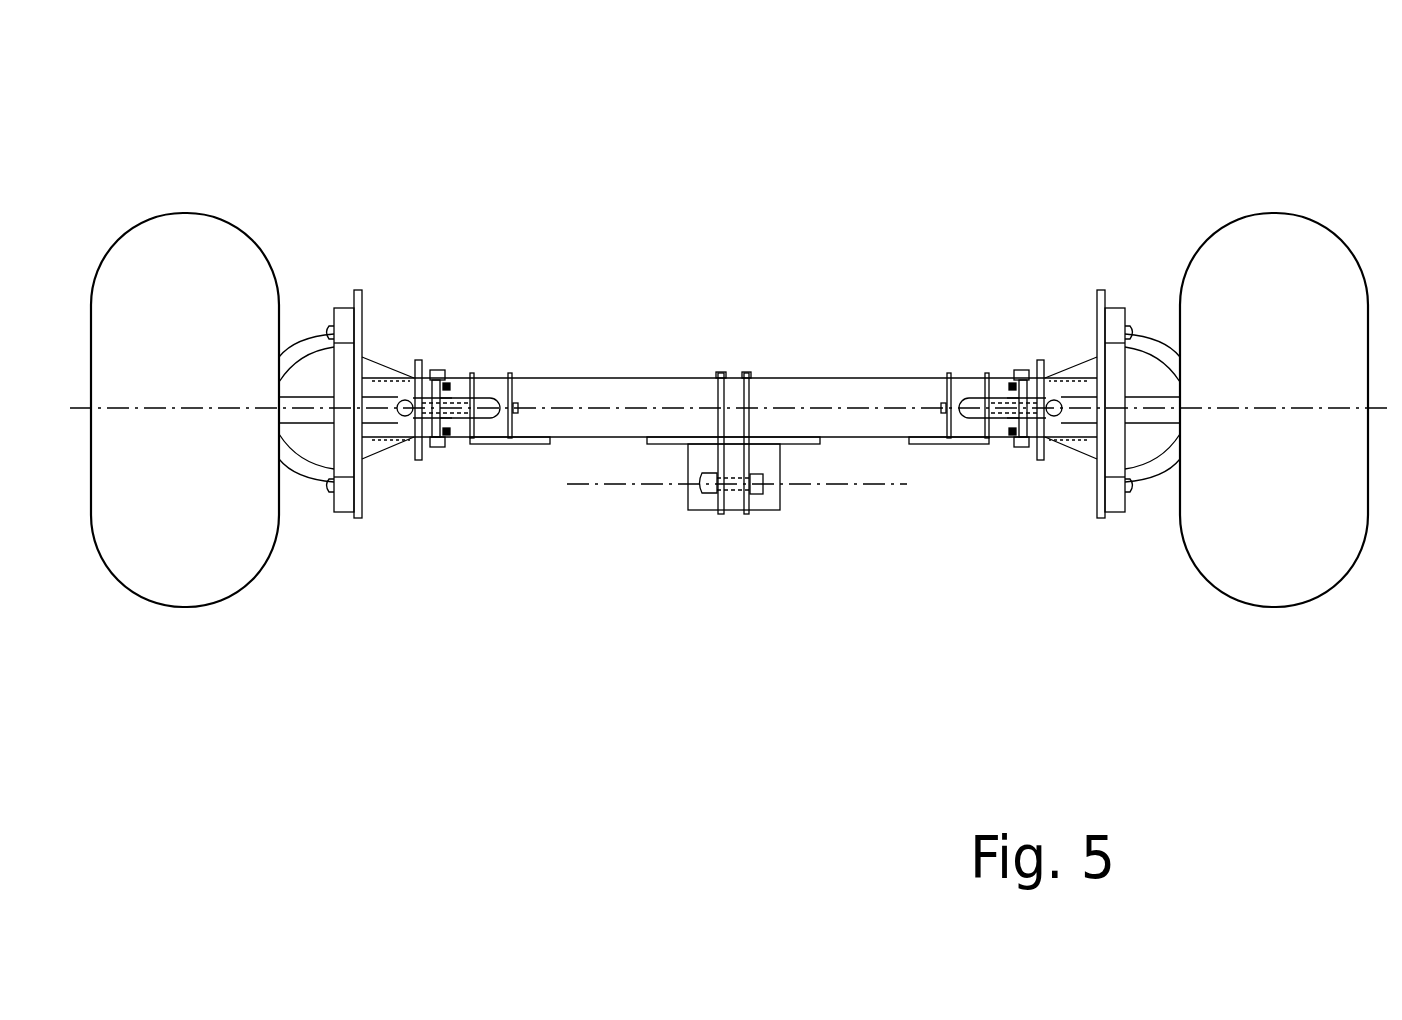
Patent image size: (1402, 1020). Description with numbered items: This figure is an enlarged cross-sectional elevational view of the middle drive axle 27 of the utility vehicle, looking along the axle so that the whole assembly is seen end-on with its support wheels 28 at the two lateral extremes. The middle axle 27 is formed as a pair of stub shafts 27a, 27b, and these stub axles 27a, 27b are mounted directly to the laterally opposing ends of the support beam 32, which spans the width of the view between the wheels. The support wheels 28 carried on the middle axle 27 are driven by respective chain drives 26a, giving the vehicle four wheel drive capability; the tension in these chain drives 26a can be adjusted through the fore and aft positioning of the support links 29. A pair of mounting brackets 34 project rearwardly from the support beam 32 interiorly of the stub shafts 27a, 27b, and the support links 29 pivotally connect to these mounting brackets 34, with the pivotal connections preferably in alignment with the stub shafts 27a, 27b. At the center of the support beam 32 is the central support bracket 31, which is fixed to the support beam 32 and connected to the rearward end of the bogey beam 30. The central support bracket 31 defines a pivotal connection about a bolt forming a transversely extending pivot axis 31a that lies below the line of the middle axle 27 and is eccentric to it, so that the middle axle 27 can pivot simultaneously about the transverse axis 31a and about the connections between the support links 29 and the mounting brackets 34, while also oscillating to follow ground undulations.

The middle axle 27 is at (745, 172).
The stub shaft 27a is at (1143, 424).
The stub shaft 27b is at (303, 395).
The support wheel 28 is at (172, 213).
The support link 29 is at (496, 440).
The bogey beam 30 is at (706, 512).
The central support bracket 31 is at (718, 460).
The transversely extending pivot axis 31a is at (835, 487).
The support beam 32 is at (648, 378).
The mounting bracket 34 is at (462, 440).
The chain drive 26a is at (415, 450).